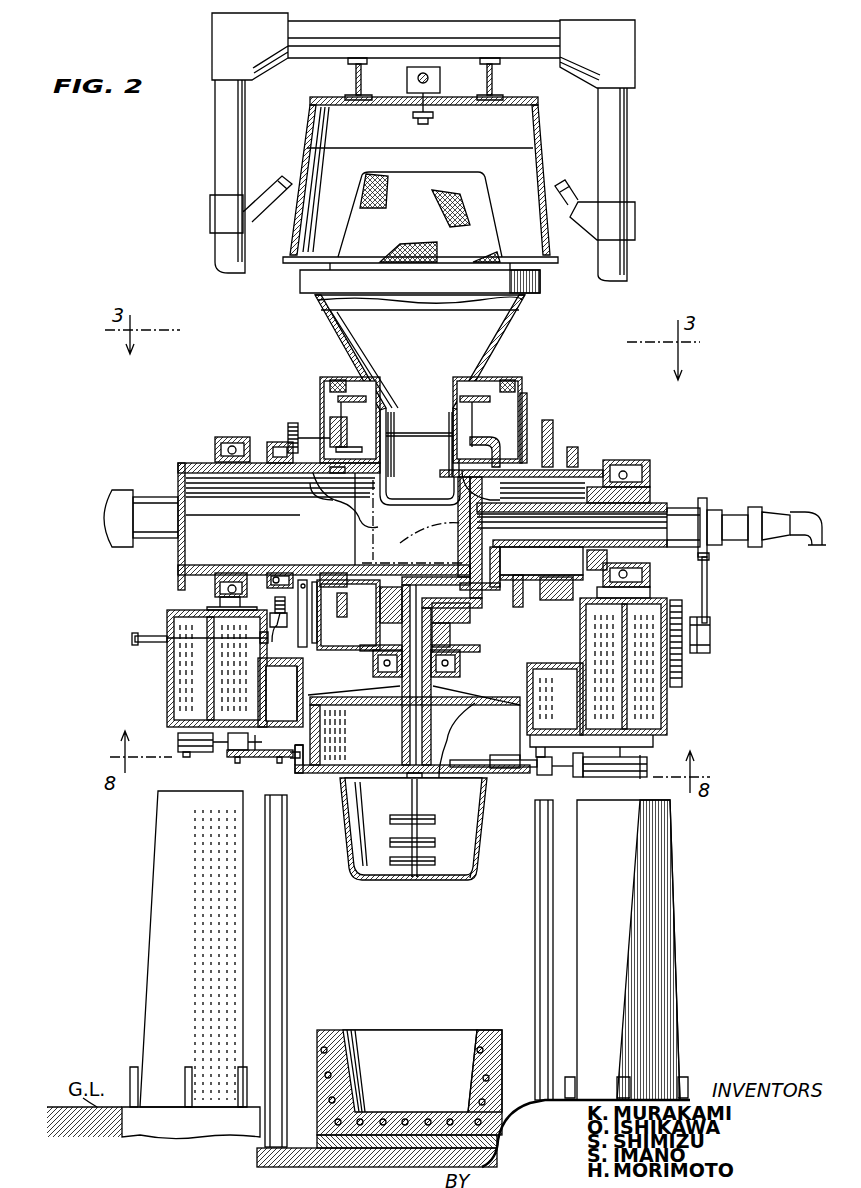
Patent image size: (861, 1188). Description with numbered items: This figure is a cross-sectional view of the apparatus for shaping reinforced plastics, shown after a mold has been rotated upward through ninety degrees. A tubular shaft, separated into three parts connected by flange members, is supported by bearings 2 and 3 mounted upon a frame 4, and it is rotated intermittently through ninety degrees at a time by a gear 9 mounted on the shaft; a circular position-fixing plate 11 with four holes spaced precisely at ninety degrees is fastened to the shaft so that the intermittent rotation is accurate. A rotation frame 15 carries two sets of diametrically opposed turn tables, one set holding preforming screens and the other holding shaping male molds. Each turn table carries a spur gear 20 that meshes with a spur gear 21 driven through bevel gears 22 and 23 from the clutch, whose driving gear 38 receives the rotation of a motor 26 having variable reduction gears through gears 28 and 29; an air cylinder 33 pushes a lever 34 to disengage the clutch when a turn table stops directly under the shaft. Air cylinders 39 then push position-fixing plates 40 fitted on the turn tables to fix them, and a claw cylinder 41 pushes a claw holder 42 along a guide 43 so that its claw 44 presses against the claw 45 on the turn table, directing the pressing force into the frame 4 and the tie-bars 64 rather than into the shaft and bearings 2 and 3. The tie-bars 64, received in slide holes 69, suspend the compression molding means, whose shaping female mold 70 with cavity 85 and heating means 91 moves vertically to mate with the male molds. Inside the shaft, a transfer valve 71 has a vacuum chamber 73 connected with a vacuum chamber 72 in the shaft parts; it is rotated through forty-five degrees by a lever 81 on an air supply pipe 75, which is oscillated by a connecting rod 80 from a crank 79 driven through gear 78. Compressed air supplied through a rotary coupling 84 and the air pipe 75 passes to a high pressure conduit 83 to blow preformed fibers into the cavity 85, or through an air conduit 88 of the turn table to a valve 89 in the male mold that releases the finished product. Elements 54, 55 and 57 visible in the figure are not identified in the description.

The bearing 2 is at (648, 466).
The bearing 3 is at (225, 436).
The frame 4 is at (167, 690).
The gear 9 is at (554, 428).
The position-fixing plate 11 is at (579, 452).
The rotation frame 15 is at (527, 415).
The spur gear 20 is at (362, 396).
The spur gear 21 is at (338, 378).
The bevel gear 22 is at (342, 467).
The bevel gear 23 is at (333, 428).
The motor 26 is at (112, 522).
The gear 28 is at (274, 442).
The gear 29 is at (285, 573).
The air cylinder 33 is at (150, 642).
The lever 34 is at (282, 660).
The driving gear 38 is at (270, 640).
The air cylinder 39 is at (617, 777).
The position-fixing plate 40 is at (500, 773).
The claw cylinder 41 is at (192, 752).
The claw holder 42 is at (270, 760).
The guide 43 is at (245, 757).
The claw 44 is at (320, 745).
The claw 45 is at (303, 773).
The bowl 54 is at (428, 195).
The frame 55 is at (230, 47).
The support 57 is at (418, 80).
The tie-bar 64 is at (268, 1038).
The slide hole 69 is at (257, 1147).
The shaping female mold 70 is at (422, 1072).
The transfer valve 71 is at (443, 517).
The vacuum chamber 72 is at (200, 548).
The vacuum chamber 73 is at (400, 525).
The air supply pipe 75 is at (655, 503).
The gear 78 is at (676, 600).
The crank 79 is at (705, 646).
The connecting rod 80 is at (708, 592).
The lever 81 is at (705, 500).
The high pressure conduit 83 is at (478, 452).
The rotary coupling 84 is at (785, 543).
The cavity 85 is at (427, 1112).
The air conduit 88 is at (403, 743).
The valve 89 is at (445, 870).
The heating means 91 is at (500, 1053).